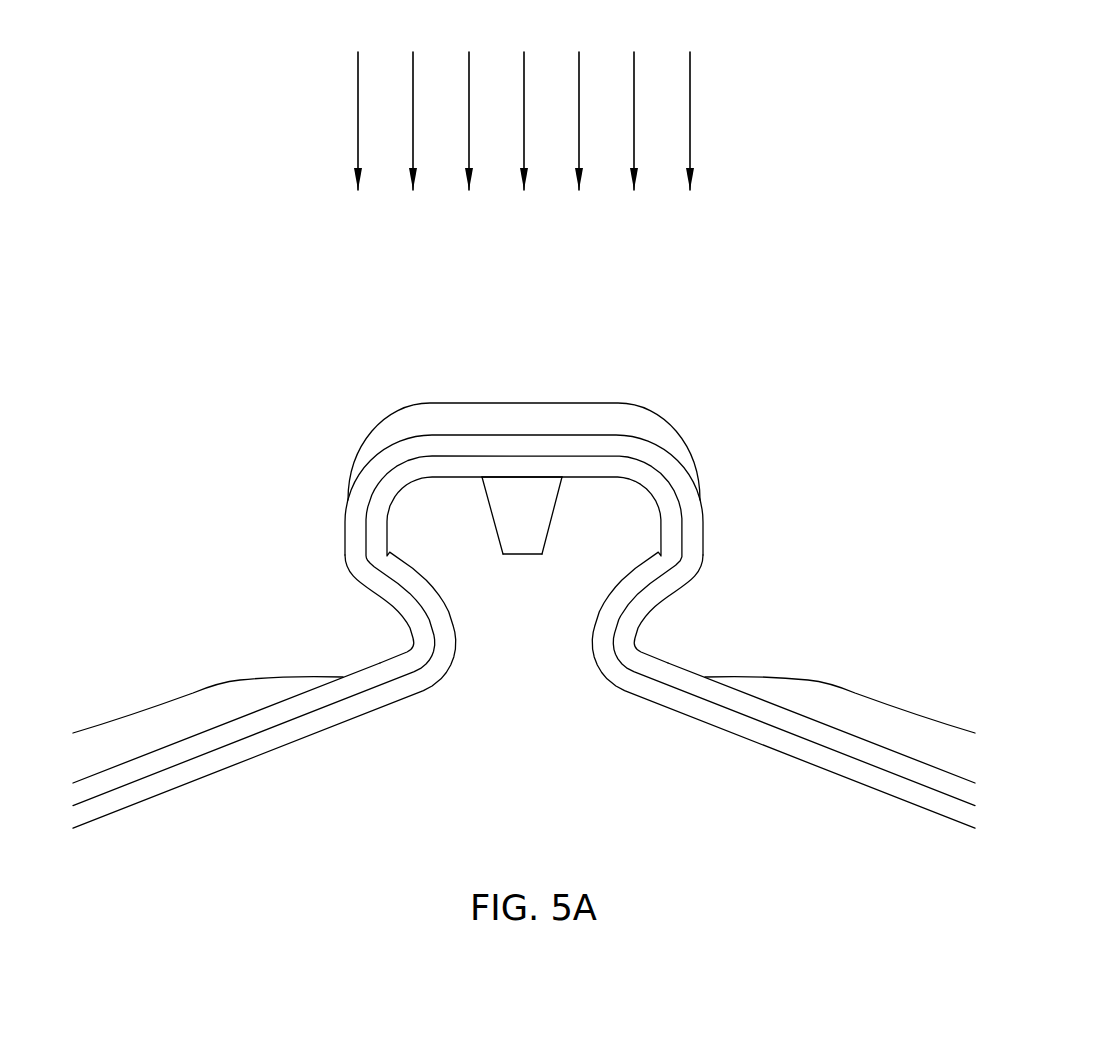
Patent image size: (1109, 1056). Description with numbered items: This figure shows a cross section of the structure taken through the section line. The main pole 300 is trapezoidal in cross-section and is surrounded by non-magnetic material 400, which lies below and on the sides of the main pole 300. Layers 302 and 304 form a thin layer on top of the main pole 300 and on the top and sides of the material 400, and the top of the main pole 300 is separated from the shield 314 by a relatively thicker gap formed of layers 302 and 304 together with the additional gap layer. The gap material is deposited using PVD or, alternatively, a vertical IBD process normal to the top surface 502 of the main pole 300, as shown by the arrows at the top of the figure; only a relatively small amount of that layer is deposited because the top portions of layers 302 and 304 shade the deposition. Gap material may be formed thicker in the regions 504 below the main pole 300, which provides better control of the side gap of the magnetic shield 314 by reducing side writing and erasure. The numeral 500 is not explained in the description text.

The shield 314 is at (546, 243).
The non-magnetic material 400 is at (542, 816).
The layer 302 is at (940, 805).
The layer 304 is at (858, 748).
The regions 504 is at (385, 640).
The main pole 300 is at (503, 517).
The top surface 502 is at (517, 474).
The bottom surface 500 is at (527, 557).